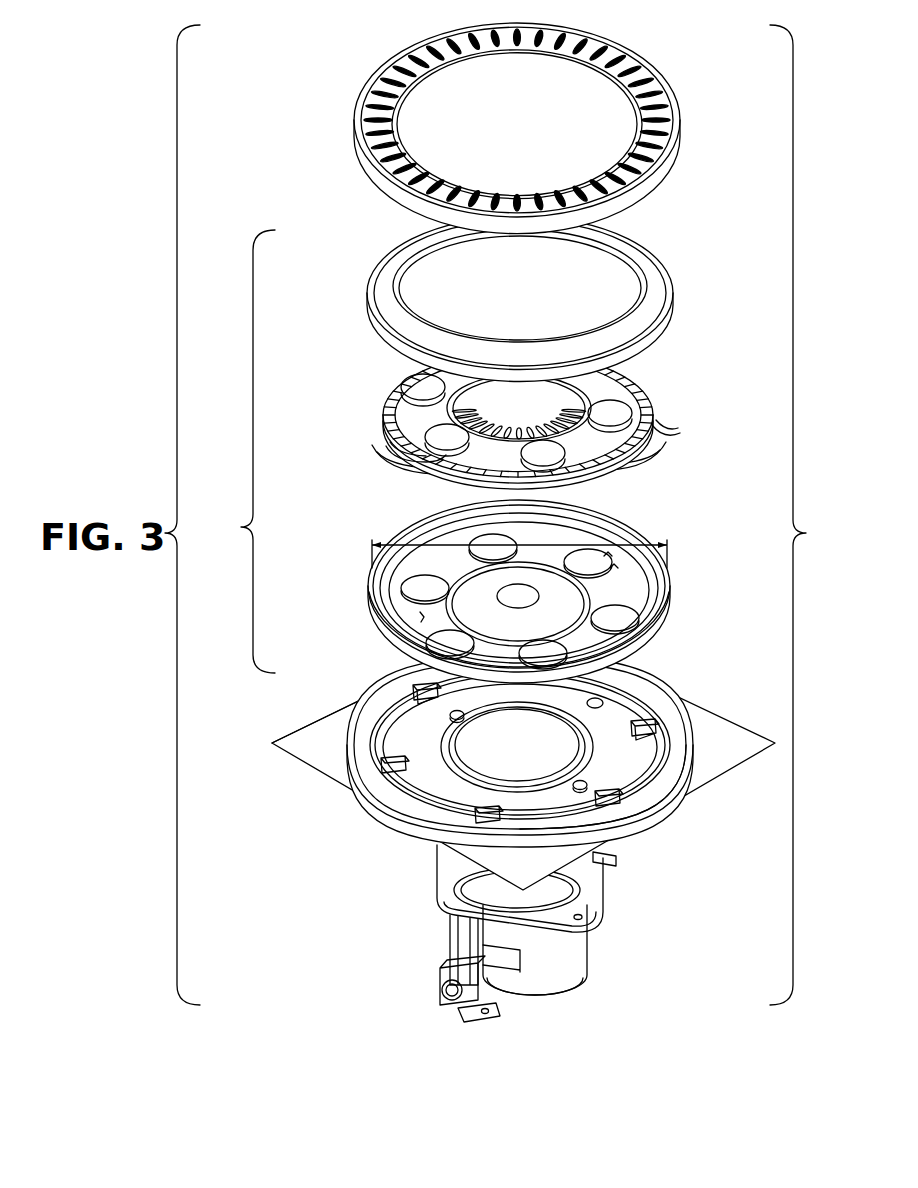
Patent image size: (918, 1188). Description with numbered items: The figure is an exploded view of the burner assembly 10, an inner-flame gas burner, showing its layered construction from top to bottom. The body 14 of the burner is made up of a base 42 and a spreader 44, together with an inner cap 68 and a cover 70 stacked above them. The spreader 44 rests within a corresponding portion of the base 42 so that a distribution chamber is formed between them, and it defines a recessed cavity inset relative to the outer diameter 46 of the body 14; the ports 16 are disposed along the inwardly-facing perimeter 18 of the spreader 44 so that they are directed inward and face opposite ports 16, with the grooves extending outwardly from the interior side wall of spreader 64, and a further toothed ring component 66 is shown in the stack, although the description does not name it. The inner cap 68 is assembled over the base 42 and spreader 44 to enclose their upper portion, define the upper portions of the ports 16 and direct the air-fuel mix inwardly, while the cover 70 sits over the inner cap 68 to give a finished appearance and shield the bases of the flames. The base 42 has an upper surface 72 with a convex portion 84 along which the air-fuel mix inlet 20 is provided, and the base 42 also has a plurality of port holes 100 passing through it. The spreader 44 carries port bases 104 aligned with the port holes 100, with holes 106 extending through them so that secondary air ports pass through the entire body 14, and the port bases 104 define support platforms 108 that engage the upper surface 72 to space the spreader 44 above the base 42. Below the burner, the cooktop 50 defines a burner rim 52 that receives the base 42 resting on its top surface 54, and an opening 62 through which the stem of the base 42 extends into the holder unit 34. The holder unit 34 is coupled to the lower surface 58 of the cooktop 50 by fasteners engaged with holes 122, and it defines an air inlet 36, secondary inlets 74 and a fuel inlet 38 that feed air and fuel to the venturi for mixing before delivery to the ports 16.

The burner assembly 10 is at (502, 515).
The body 14 is at (438, 451).
The ports 16 is at (666, 426).
The perimeter 18 is at (531, 310).
The air-fuel mix inlet 20 is at (524, 584).
The holder unit 34 is at (592, 960).
The air inlet 36 is at (516, 976).
The fuel inlet 38 is at (446, 993).
The base 42 is at (378, 614).
The spreader 44 is at (628, 464).
The outer diameter 46 is at (604, 600).
The cooktop 50 is at (706, 722).
The burner rim 52 is at (644, 781).
The top surface 54 is at (712, 742).
The lower surface 58 is at (288, 768).
The opening 62 is at (562, 752).
The interior side wall of spreader 64 is at (505, 313).
The gear ring 66 is at (396, 409).
The inner cap 68 is at (656, 277).
The cover 70 is at (648, 188).
The upper surface 72 is at (422, 616).
The secondary inlets 74 is at (530, 932).
The convex portion 84 is at (476, 582).
The port holes 100 is at (660, 620).
The port bases 104 is at (623, 410).
The holes 106 is at (386, 376).
The support platforms 108 is at (645, 728).
The holes 122 is at (579, 775).